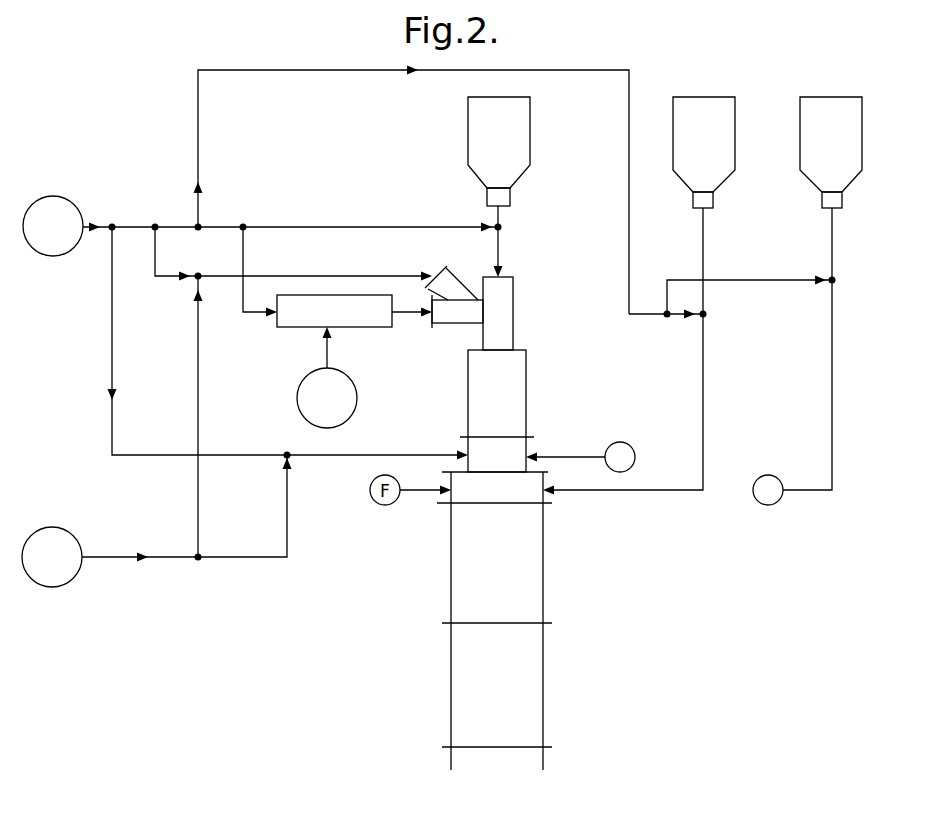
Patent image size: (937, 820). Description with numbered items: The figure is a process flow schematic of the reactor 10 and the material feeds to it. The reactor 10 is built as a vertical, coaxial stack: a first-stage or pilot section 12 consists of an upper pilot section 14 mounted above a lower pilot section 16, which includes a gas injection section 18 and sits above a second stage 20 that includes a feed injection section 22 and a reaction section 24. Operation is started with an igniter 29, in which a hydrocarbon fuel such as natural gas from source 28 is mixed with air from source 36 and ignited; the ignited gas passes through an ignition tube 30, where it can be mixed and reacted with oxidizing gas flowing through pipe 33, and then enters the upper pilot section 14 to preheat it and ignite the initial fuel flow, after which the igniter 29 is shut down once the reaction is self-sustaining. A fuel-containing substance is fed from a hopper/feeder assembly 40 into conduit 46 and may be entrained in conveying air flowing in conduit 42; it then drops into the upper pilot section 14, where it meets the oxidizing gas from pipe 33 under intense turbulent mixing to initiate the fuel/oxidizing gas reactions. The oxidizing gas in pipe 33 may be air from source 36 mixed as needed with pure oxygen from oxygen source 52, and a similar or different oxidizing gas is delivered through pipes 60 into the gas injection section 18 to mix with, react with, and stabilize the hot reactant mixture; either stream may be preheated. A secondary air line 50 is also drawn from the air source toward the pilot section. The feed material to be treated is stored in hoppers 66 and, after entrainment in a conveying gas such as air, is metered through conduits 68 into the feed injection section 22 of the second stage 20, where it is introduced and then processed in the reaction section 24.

The reactor 10 is at (552, 545).
The first-stage or pilot section 12 is at (538, 354).
The upper pilot section 14 is at (514, 310).
The lower pilot section 16 is at (527, 380).
The gas injection section 18 is at (527, 445).
The second stage 20 is at (552, 609).
The feed injection section 22 is at (446, 504).
The reaction section 24 is at (450, 584).
The natural gas source 28 is at (357, 399).
The igniter 29 is at (290, 328).
The ignition tube 30 is at (456, 325).
The pipe 33 is at (449, 268).
The air source 36 is at (62, 256).
The hopper/feeder assembly 40 is at (468, 113).
The conduit 42 is at (372, 226).
The conduit 46 is at (500, 255).
The secondary air line 50 is at (332, 276).
The oxygen source 52 is at (65, 528).
The pipes 60 is at (372, 453).
The hoppers 66 is at (803, 103).
The conduits 68 is at (831, 358).